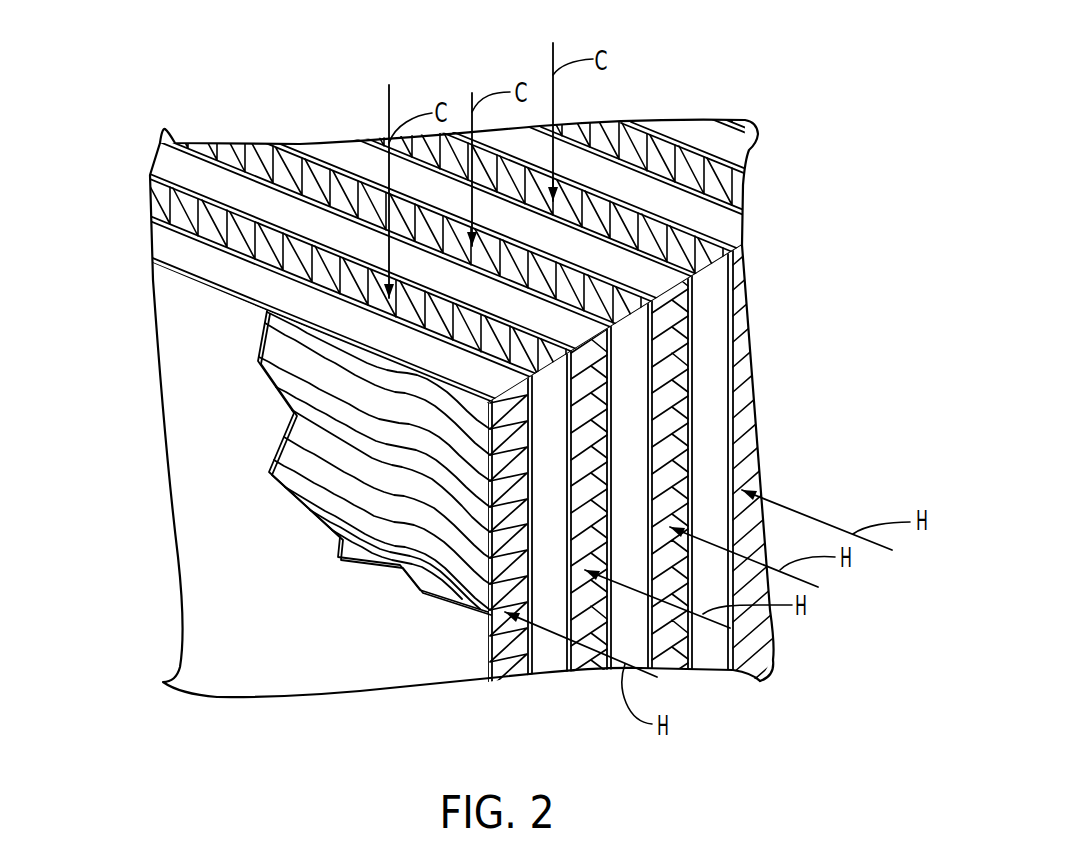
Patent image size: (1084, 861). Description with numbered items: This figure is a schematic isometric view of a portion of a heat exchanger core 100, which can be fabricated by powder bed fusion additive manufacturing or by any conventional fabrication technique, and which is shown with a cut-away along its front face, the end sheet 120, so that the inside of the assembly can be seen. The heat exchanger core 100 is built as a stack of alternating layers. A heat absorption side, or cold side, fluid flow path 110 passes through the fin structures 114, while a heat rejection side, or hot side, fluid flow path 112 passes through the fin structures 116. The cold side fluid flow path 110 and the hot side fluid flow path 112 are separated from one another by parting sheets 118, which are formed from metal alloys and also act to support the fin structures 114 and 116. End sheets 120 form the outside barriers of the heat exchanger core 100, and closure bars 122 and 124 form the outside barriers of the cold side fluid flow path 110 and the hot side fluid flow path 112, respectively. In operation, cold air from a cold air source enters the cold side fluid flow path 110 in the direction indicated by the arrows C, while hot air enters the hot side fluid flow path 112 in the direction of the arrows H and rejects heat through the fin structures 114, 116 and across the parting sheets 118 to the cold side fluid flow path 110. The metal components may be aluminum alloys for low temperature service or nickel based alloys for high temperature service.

The heat exchanger core 100 is at (757, 96).
The cold side fluid flow path 110 is at (233, 135).
The hot side fluid flow path 112 is at (305, 122).
The fin structures 114 is at (300, 146).
The fin structures 116 is at (363, 462).
The parting sheets 118 is at (633, 253).
The end sheet 120 is at (262, 617).
The closure bars 122 is at (713, 398).
The closure bars 124 is at (333, 153).